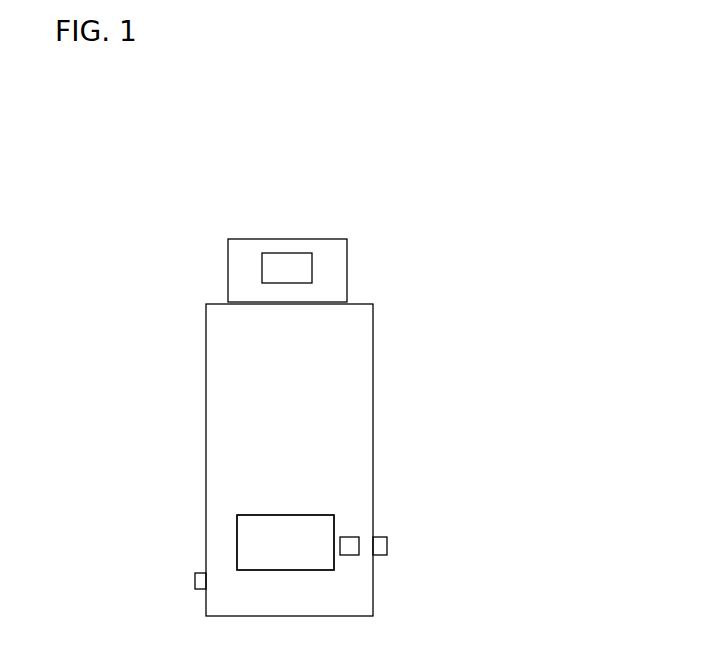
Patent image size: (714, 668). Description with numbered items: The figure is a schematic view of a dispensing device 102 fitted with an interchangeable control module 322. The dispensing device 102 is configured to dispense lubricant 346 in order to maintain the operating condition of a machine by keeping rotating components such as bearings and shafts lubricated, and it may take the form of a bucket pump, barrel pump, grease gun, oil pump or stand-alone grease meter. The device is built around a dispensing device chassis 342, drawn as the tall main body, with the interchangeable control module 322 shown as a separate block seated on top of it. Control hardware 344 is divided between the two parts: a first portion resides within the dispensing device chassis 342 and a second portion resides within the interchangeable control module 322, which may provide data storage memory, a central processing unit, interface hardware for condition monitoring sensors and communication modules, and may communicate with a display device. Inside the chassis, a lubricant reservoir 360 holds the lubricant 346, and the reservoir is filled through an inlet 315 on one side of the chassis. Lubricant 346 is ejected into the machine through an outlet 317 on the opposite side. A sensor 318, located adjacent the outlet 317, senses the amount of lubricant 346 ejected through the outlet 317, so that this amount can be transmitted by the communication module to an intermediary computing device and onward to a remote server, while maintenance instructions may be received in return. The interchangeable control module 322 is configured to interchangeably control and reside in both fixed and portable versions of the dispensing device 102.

The dispensing device 102 is at (432, 192).
The dispensing device chassis 342 is at (373, 435).
The interchangeable control module 322 is at (332, 242).
The control hardware 344 is at (273, 265).
The lubricant 346 is at (251, 549).
The lubricant reservoir 360 is at (235, 526).
The sensor 318 is at (353, 535).
The outlet 317 is at (388, 547).
The inlet 315 is at (195, 581).